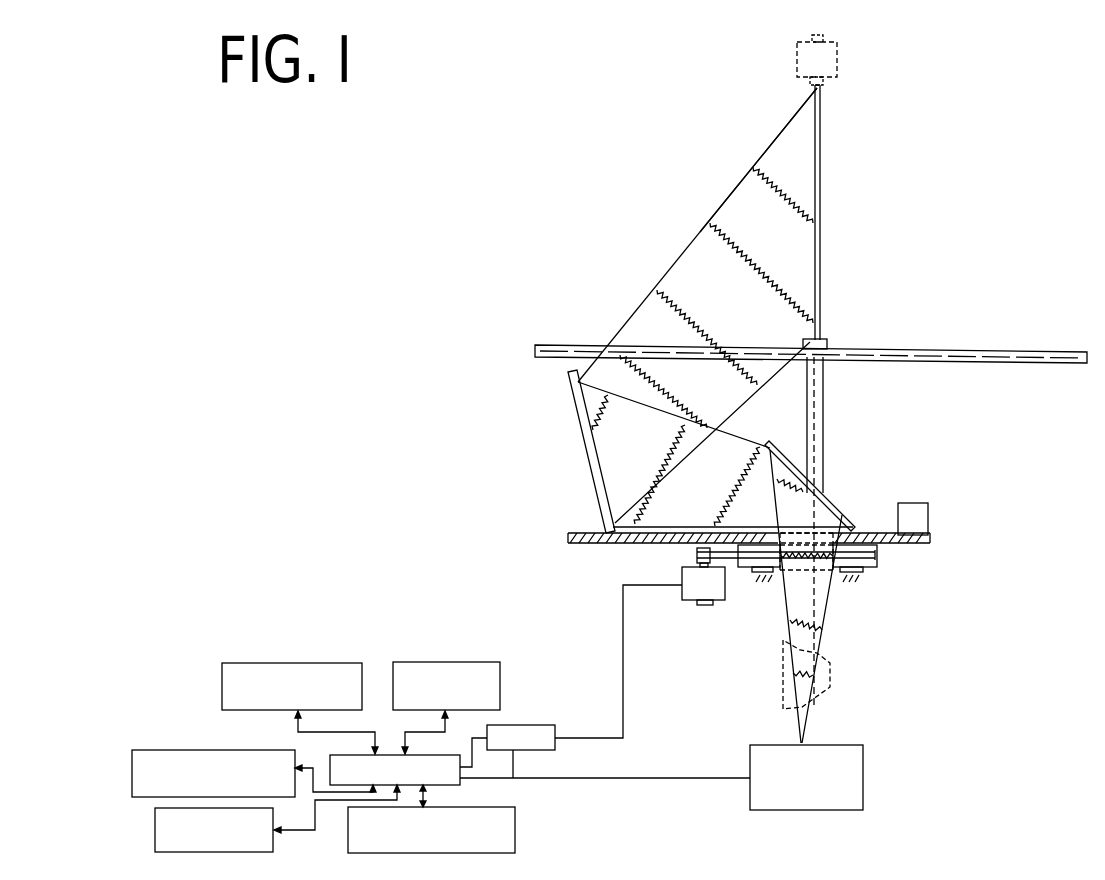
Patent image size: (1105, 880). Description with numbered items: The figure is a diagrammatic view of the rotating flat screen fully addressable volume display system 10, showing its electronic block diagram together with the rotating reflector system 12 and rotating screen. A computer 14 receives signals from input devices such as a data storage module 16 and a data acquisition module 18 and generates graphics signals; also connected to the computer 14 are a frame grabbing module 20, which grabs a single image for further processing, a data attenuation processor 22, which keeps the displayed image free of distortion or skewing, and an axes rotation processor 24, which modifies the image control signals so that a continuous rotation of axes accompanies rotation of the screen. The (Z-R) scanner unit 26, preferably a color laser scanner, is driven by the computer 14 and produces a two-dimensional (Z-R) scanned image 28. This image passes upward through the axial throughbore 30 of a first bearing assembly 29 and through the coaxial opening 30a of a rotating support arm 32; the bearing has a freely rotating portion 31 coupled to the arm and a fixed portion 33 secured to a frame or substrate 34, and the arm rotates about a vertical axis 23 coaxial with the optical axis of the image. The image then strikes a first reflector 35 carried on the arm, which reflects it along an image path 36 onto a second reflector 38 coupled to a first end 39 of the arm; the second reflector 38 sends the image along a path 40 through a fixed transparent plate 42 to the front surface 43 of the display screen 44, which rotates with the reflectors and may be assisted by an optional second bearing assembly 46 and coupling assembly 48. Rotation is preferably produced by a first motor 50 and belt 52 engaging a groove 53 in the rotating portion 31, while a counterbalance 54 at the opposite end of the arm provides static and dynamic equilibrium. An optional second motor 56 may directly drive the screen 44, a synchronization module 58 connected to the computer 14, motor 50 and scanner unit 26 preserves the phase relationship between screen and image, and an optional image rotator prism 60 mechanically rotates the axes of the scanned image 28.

The rotating flat screen fully addressable volume display system 10 is at (963, 242).
The rotating reflector system 12 is at (920, 659).
The computer 14 is at (460, 787).
The data storage module 16 is at (500, 673).
The data acquisition module 18 is at (222, 683).
The frame grabbing module 20 is at (153, 845).
The data attenuation processor 22 is at (187, 750).
The vertical axis 23 is at (819, 437).
The axes rotation processor 24 is at (517, 838).
The (Z-R) scanner unit 26 is at (865, 770).
The (Z-R) scanned image 28 is at (748, 200).
The first bearing assembly 29 is at (884, 548).
The axial throughbore 30 is at (773, 577).
The opening 30a is at (830, 538).
The freely rotating portion 31 is at (868, 563).
The rotating support arm 32 is at (662, 545).
The fixed portion 33 is at (865, 570).
The frame or substrate 34 is at (860, 580).
The first reflector 35 is at (837, 503).
The image path 36 is at (742, 448).
The second reflector 38 is at (595, 490).
The first end 39 is at (568, 538).
The path 40 is at (668, 278).
The fixed transparent plate 42 is at (920, 350).
The front surface 43 is at (804, 126).
The display screen 44 is at (820, 265).
The second bearing assembly 46 is at (827, 343).
The coupling assembly 48 is at (822, 400).
The first motor 50 is at (690, 600).
The belt 52 is at (733, 565).
The groove 53 is at (873, 558).
The counterbalance 54 is at (928, 517).
The second motor 56 is at (837, 60).
The synchronization module 58 is at (555, 727).
The image rotator prism 60 is at (783, 667).